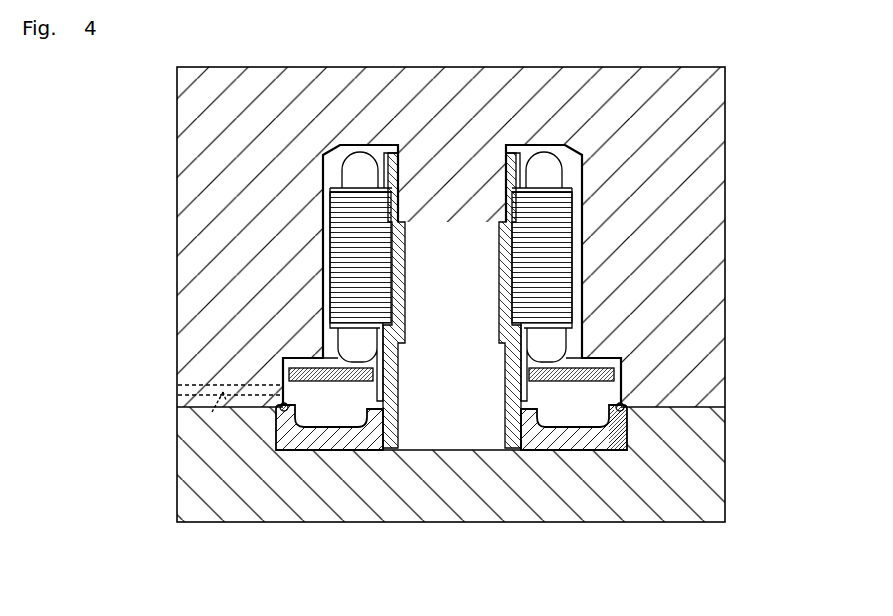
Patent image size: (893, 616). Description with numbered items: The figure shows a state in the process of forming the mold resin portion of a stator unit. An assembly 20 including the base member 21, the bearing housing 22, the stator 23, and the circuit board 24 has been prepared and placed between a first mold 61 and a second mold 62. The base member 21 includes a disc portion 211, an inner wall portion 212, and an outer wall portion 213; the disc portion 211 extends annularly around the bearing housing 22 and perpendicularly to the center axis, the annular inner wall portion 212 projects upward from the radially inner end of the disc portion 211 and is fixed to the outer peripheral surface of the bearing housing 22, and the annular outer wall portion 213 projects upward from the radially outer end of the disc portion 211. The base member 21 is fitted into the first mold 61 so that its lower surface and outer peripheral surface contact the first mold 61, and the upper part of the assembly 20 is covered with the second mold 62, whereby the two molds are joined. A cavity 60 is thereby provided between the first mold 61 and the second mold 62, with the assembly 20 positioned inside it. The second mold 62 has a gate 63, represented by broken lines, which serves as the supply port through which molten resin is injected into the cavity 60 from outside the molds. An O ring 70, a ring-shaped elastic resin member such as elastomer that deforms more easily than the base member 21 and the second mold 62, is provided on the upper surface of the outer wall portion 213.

The assembly 20 is at (329, 166).
The base member 21 is at (635, 555).
The disc portion 211 is at (577, 448).
The inner wall portion 212 is at (523, 448).
The outer wall portion 213 is at (620, 448).
The bearing housing 22 is at (506, 385).
The stator 23 is at (548, 247).
The circuit board 24 is at (287, 354).
The cavity 60 is at (334, 407).
The first mold 61 is at (668, 468).
The second mold 62 is at (250, 242).
The gate 63 is at (200, 422).
The O ring 70 is at (623, 405).